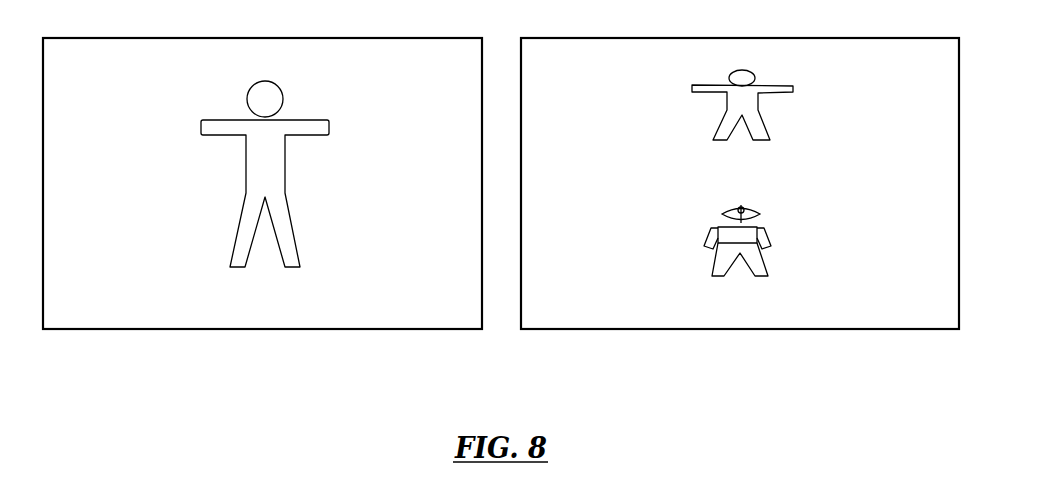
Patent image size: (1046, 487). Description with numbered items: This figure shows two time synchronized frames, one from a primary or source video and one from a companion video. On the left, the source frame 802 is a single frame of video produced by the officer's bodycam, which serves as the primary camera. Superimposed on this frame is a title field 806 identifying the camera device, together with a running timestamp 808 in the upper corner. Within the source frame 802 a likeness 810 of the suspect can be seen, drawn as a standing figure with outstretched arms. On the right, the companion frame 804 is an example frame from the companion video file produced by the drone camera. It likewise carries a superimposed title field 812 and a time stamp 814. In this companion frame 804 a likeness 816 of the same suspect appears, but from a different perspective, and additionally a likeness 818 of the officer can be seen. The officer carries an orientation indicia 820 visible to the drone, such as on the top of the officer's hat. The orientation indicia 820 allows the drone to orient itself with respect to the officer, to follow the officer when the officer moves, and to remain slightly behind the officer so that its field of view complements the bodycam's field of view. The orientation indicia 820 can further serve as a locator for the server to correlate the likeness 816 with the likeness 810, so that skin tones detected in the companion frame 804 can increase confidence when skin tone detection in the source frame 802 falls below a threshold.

The source frame 802 is at (118, 330).
The companion frame 804 is at (590, 330).
The title field 806 is at (112, 45).
The running timestamp 808 is at (428, 45).
The likeness of the suspect 810 is at (245, 157).
The title field 812 is at (590, 45).
The time stamp 814 is at (910, 44).
The likeness of the suspect 816 is at (758, 100).
The likeness of the officer 818 is at (718, 250).
The orientation indicia 820 is at (745, 208).